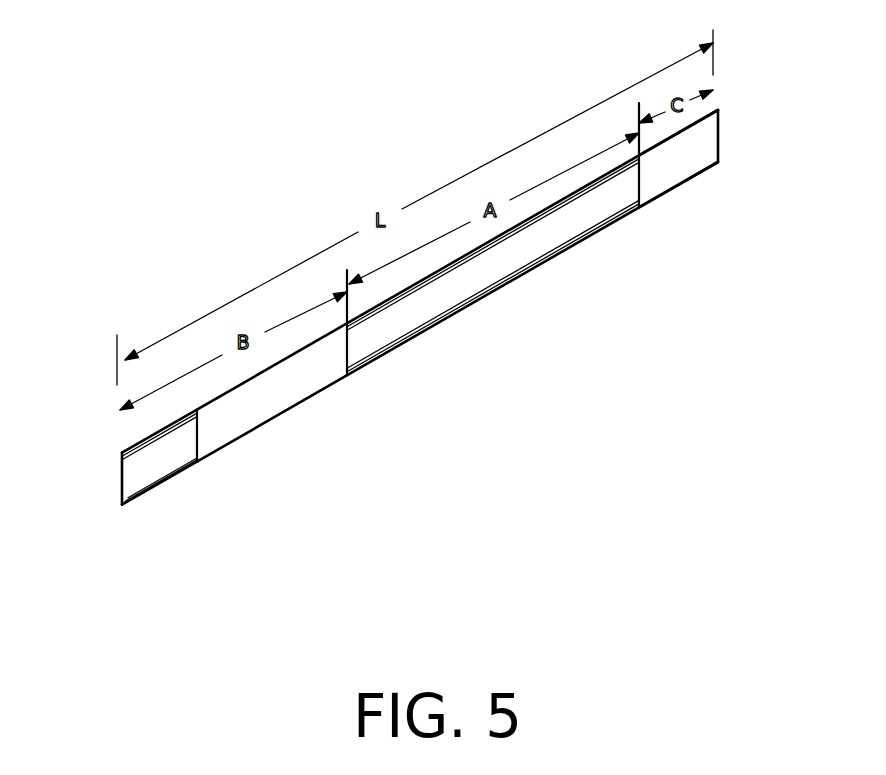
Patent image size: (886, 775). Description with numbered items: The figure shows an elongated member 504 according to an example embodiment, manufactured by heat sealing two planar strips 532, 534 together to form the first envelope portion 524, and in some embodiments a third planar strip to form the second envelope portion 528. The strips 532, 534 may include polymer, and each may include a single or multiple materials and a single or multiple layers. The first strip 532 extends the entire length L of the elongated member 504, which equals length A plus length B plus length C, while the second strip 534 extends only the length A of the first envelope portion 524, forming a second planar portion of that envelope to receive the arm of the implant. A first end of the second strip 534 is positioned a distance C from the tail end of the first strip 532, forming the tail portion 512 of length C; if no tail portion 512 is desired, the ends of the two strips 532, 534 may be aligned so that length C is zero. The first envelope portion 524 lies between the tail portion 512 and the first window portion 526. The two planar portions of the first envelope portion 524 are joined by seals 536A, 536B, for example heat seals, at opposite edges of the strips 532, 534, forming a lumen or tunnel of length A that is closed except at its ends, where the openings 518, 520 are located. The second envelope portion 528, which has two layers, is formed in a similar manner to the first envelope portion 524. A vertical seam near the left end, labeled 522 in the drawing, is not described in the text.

The elongated member 504 is at (421, 335).
The tail portion 512 is at (707, 144).
The opening 518 is at (641, 177).
The opening 520 is at (347, 328).
The second end portion 522 is at (196, 441).
The first envelope portion 524 is at (538, 242).
The first window portion 526 is at (220, 435).
The second envelope portion 528 is at (133, 477).
The first strip 532 is at (698, 156).
The second strip 534 is at (470, 278).
The seal 536A is at (465, 256).
The seal 536B is at (421, 332).